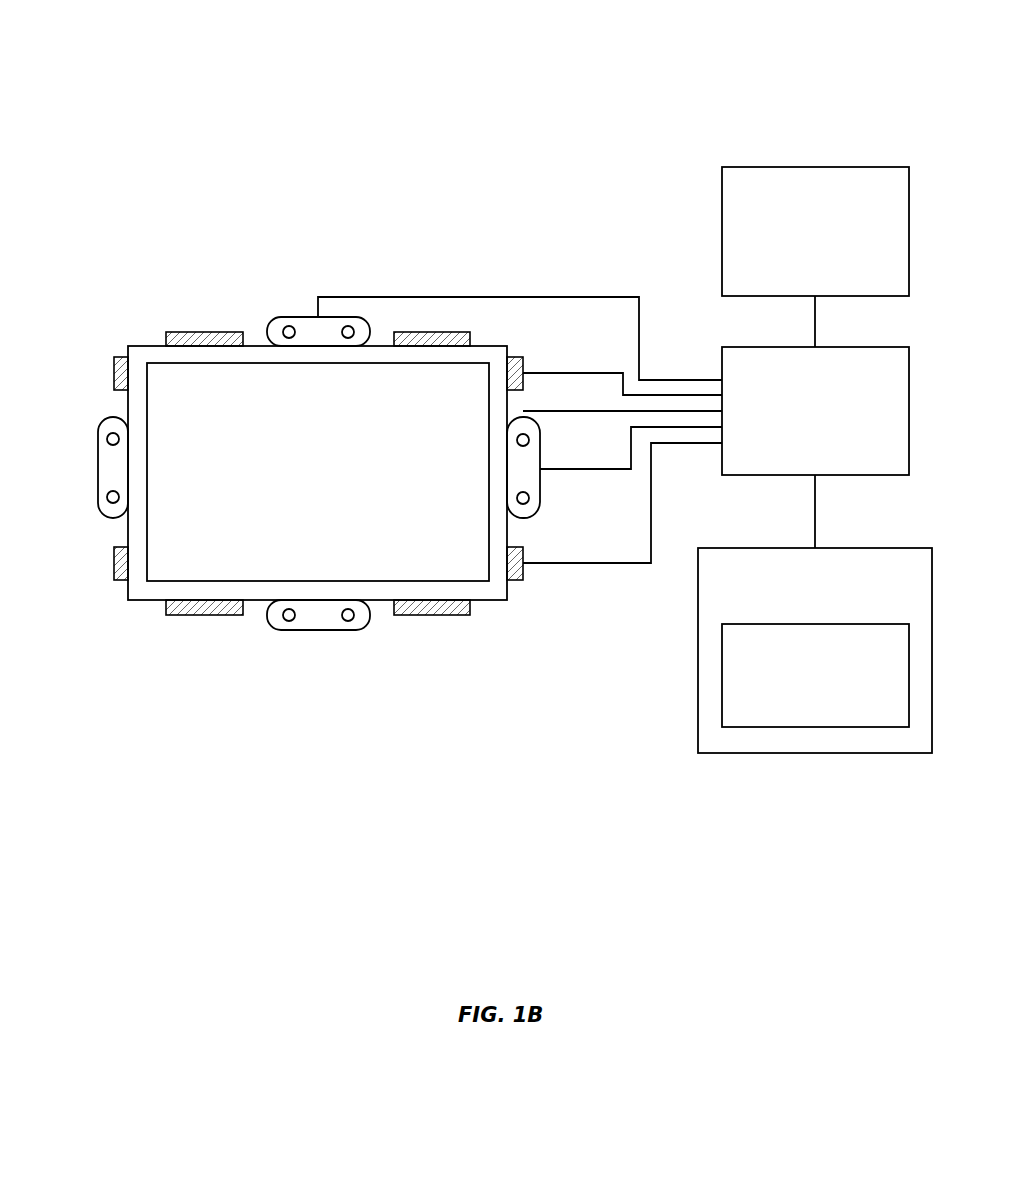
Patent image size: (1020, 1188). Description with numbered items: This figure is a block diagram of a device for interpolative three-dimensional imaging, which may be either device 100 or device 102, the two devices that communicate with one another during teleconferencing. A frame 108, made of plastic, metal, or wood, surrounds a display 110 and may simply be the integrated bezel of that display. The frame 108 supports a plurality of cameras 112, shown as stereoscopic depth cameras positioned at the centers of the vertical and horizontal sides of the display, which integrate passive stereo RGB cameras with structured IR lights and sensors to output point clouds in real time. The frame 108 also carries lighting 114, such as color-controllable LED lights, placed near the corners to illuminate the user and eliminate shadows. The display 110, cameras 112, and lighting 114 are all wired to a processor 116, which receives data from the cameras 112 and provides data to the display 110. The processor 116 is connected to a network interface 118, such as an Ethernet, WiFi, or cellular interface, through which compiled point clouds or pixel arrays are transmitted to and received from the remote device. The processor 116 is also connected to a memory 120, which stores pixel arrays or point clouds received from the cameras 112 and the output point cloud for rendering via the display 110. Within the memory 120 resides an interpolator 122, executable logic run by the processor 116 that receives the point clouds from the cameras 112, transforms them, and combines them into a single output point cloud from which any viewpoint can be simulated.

The device 100 is at (475, 456).
The device 102 is at (475, 456).
The frame 108 is at (262, 587).
The display 110 is at (318, 472).
The cameras 112 is at (267, 328).
The lights 114 is at (513, 357).
The processor 116 is at (815, 411).
The network interface 118 is at (815, 231).
The memory 120 is at (815, 650).
The interpolator 122 is at (815, 675).